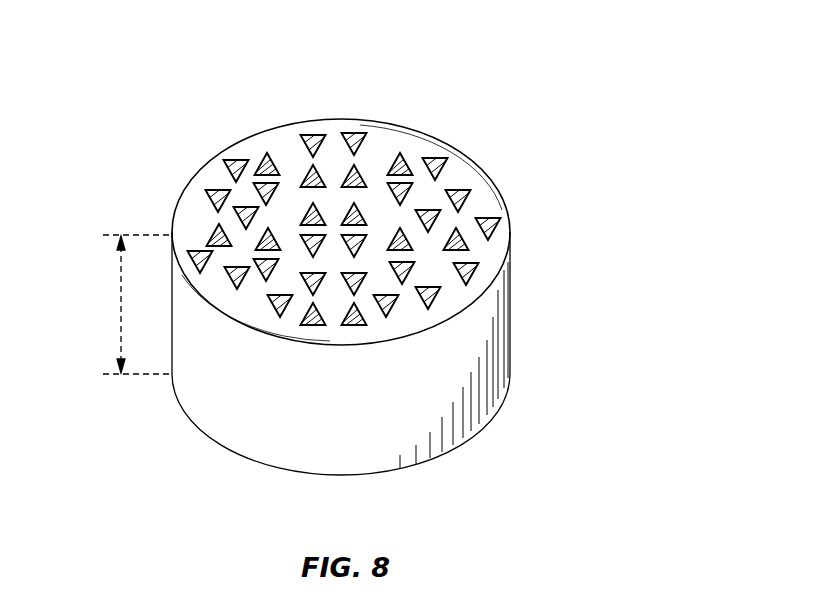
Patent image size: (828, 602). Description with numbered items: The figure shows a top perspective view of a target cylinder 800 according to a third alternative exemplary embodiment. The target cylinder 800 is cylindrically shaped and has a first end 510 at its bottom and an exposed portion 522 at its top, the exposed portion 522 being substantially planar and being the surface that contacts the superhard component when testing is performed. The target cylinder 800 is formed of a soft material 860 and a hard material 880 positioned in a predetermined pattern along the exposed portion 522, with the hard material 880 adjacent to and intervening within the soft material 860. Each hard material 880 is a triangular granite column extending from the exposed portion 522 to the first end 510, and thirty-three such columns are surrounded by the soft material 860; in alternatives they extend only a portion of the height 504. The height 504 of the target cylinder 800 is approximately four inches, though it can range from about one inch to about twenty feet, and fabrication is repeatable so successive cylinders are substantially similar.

The target cylinder 800 is at (606, 72).
The first end 510 is at (420, 462).
The soft material 860 is at (452, 273).
The exposed portion 522 is at (374, 156).
The hard material 880 is at (492, 229).
The height 504 is at (120, 306).